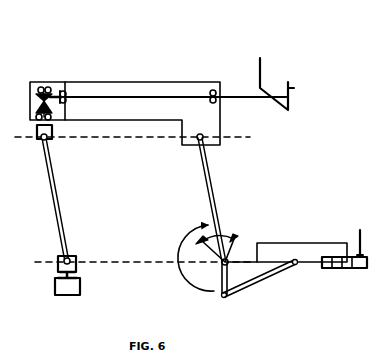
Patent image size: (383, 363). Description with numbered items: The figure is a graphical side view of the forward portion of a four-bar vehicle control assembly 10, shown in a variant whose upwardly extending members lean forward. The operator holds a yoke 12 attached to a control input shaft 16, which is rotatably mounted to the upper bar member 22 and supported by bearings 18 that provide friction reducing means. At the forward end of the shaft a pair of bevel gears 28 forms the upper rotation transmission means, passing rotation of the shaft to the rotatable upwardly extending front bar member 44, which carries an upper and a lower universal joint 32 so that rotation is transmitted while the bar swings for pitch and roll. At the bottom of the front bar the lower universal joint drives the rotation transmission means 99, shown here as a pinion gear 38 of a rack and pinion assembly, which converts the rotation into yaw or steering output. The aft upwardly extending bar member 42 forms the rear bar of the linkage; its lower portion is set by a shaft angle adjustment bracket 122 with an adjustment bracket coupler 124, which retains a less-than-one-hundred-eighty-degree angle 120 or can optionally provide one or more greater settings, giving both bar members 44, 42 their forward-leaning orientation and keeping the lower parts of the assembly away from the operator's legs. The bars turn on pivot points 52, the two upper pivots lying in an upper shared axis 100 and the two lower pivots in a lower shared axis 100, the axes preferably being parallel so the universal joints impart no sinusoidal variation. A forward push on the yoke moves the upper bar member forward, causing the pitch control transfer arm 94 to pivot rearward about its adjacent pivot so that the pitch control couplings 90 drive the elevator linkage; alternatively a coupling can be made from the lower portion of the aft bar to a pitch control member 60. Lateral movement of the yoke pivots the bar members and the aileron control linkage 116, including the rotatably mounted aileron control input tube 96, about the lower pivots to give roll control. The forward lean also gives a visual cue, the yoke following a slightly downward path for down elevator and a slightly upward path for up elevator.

The apparatus 10 is at (260, 48).
The yoke 12 is at (286, 84).
The control input shaft 16 is at (250, 100).
The bearings 18 is at (41, 87).
The upper bar member 22 is at (144, 82).
The bevel gear 28 is at (50, 93).
The universal joint 32 is at (38, 138).
The pinion gear 38 is at (80, 290).
The aft upwardly extending bar member 42 is at (212, 206).
The rotatable upwardly extending front bar member 44 is at (56, 202).
The pivot points 52 is at (52, 150).
The pitch control member 60 is at (361, 268).
The pitch control couplings 90 is at (230, 296).
The pitch control transfer arm 94 is at (220, 293).
The aileron control input tube 96 is at (338, 268).
The rotation transmission means 99 is at (66, 296).
The shared axis 100 is at (135, 139).
The aileron control linkage 116 is at (303, 243).
The angle 120 is at (203, 274).
The shaft angle adjustment bracket 122 is at (240, 245).
The adjustment bracket coupler 124 is at (236, 238).